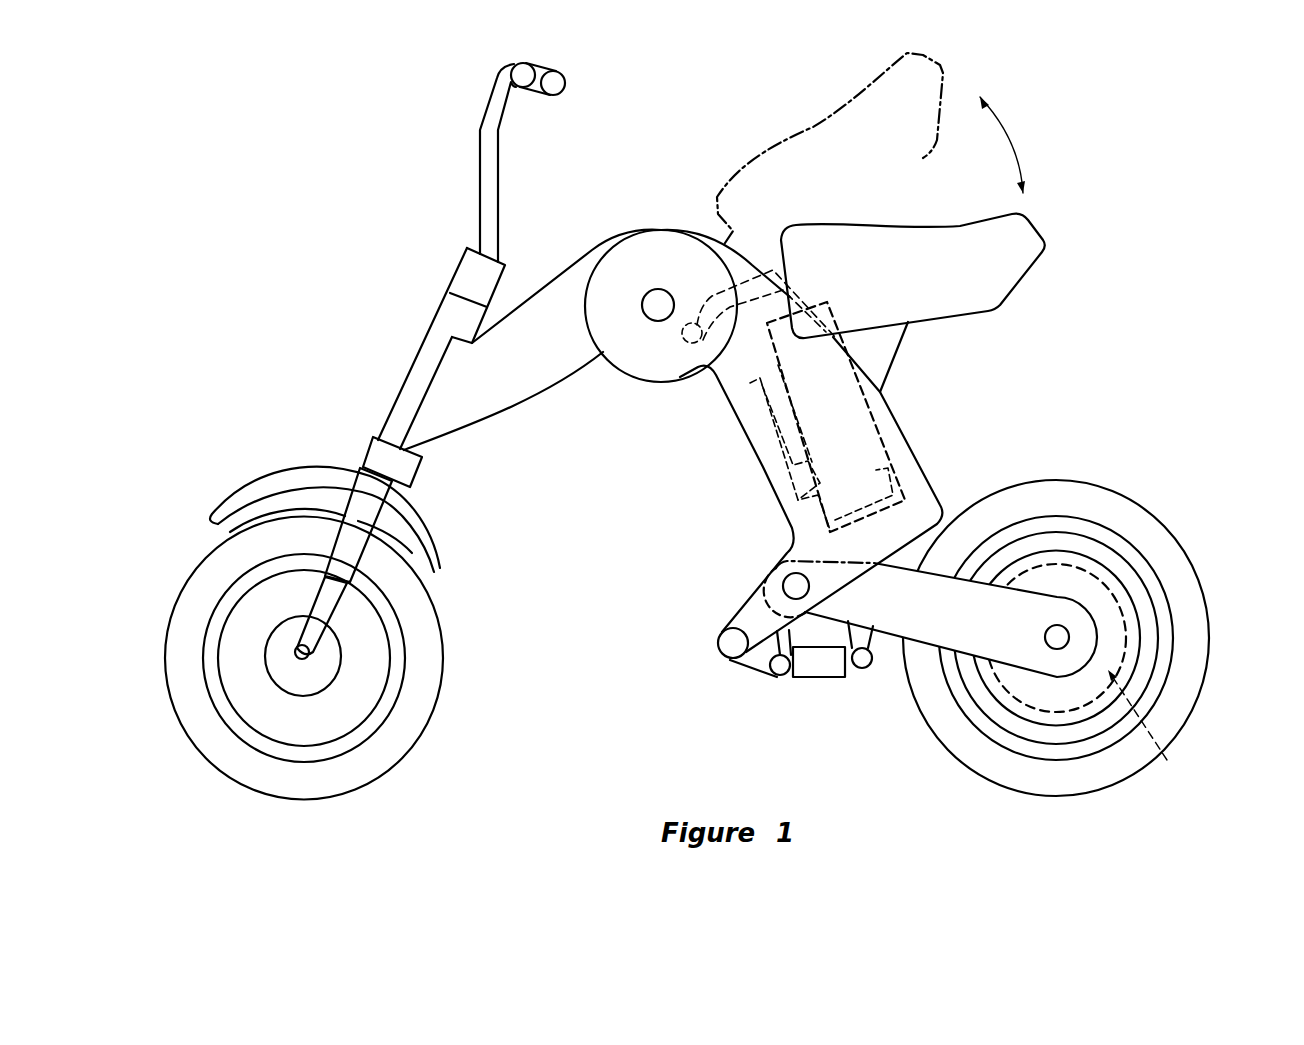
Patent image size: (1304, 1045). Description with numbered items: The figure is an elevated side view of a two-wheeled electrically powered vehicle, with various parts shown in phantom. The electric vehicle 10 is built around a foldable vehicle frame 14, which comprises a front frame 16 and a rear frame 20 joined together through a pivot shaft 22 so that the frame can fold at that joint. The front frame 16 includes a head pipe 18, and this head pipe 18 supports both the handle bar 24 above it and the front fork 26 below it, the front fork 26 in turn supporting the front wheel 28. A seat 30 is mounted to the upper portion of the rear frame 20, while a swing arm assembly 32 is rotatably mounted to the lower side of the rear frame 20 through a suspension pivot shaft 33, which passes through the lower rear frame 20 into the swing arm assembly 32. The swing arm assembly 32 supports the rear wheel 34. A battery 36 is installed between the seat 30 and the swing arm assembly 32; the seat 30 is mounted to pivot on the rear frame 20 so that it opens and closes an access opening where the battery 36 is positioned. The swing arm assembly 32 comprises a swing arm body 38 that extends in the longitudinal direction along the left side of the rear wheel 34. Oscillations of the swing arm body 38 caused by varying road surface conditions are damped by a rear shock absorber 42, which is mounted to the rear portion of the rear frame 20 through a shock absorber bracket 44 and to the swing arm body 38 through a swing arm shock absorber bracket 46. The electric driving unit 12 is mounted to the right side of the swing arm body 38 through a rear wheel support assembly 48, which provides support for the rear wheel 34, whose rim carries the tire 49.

The electric vehicle 10 is at (302, 216).
The electric driving unit 12 is at (1176, 763).
The vehicle frame 14 is at (567, 267).
The front frame 16 is at (493, 400).
The head pipe 18 is at (405, 377).
The rear frame 20 is at (668, 363).
The pivot shaft 22 is at (658, 297).
The handle bar 24 is at (567, 84).
The front fork 26 is at (332, 535).
The front wheel 28 is at (412, 745).
The seat 30 is at (1045, 230).
The swing arm assembly 32 is at (952, 650).
The suspension pivot shaft 33 is at (783, 584).
The rear wheel 34 is at (1108, 483).
The battery 36 is at (890, 445).
The swing arm body 38 is at (927, 636).
The rear shock absorber 42 is at (817, 668).
The shock absorber bracket 44 is at (762, 655).
The swing arm shock absorber bracket 46 is at (863, 667).
The rear wheel support assembly 48 is at (1072, 698).
The tire 49 is at (1196, 597).